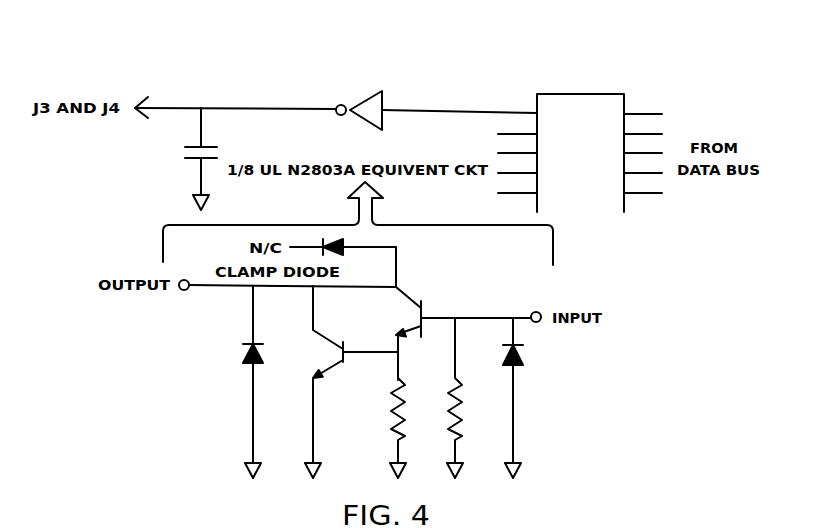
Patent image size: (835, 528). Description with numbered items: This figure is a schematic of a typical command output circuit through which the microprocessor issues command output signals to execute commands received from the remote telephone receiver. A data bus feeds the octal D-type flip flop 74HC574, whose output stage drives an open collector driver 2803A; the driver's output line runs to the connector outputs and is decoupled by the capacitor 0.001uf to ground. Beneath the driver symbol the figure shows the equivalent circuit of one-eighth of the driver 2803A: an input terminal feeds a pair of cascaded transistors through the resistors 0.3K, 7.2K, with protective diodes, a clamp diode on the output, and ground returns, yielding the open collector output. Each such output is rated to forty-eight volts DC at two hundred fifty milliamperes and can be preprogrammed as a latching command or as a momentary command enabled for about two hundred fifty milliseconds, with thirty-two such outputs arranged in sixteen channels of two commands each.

The octal D-type flip flop 74HC574 is at (580, 118).
The 1/8 UL N2803A inverter/driver 2803A is at (365, 99).
The 0.001 uf capacitor 0.001uf is at (157, 159).
The .3K resistor 0.3K is at (414, 420).
The 7.2K resistor 7.2K is at (475, 390).